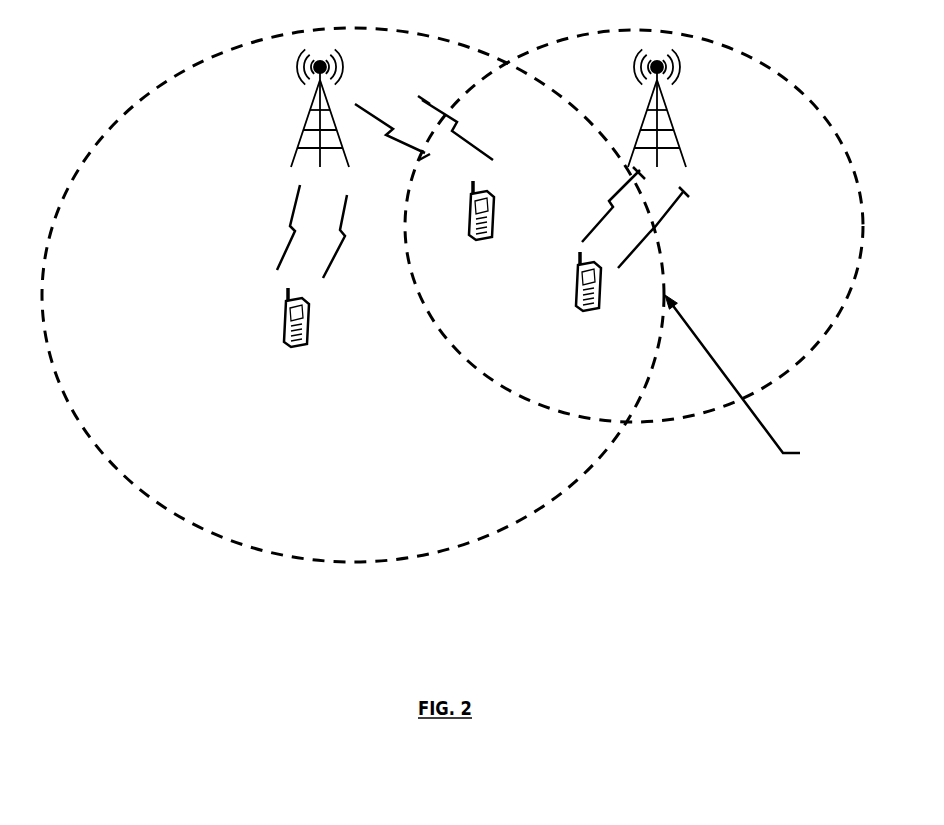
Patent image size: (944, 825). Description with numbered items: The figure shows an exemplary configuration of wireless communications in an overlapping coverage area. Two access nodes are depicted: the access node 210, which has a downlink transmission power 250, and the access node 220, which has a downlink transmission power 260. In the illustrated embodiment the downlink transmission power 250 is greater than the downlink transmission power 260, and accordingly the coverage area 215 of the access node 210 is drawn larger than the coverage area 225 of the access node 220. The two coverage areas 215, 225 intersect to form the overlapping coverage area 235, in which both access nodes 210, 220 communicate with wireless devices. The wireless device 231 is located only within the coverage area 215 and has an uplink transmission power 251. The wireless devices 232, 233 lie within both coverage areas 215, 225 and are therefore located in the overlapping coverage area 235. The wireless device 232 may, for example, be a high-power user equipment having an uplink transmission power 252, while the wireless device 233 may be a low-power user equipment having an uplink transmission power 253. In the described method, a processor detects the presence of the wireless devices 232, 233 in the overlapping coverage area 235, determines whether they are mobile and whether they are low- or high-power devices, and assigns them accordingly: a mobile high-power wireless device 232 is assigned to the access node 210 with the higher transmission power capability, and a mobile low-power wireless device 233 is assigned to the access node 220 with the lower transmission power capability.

The access node 210 is at (278, 108).
The coverage area 215 is at (353, 295).
The access node 220 is at (700, 108).
The coverage area 225 is at (645, 226).
The wireless device 231 is at (292, 335).
The wireless device 232 is at (483, 226).
The wireless device 233 is at (607, 296).
The overlapping coverage area 235 is at (758, 382).
The downlink transmission power 250 is at (334, 182).
The uplink transmission power 251 is at (343, 245).
The uplink transmission power 252 is at (474, 135).
The uplink transmission power 253 is at (653, 233).
The downlink transmission power 260 is at (598, 206).